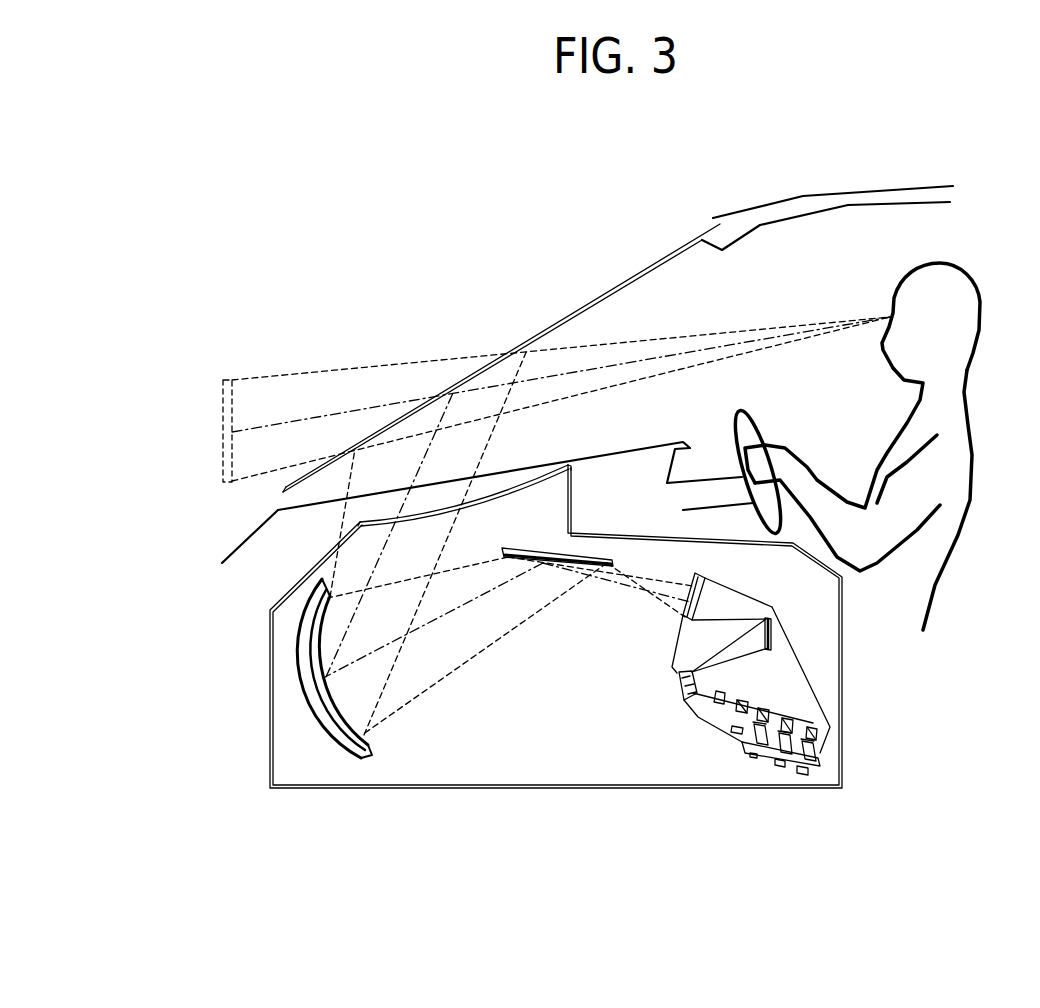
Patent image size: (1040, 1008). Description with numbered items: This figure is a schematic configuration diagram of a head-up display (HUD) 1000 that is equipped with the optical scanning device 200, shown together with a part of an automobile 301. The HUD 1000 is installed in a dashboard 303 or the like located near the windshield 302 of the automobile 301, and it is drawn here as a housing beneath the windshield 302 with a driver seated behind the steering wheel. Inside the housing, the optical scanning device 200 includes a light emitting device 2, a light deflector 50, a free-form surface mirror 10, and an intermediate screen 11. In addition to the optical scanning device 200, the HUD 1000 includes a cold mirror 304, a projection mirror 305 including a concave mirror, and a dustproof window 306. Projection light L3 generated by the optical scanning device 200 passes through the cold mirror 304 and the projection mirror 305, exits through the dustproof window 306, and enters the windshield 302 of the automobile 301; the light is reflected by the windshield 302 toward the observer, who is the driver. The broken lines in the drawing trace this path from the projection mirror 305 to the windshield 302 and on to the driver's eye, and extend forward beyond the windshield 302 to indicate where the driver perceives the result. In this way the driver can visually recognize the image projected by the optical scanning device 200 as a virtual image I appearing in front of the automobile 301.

The light emitting device 2 is at (787, 697).
The free-form surface mirror 10 is at (773, 620).
The intermediate screen 11 is at (713, 575).
The light deflector 50 is at (672, 691).
The optical scanning device 200 is at (713, 752).
The head-up display (HUD) 1000 is at (513, 798).
The automobile 301 is at (904, 182).
The windshield 302 is at (682, 247).
The dashboard 303 is at (647, 442).
The cold mirror 304 is at (606, 553).
The projection mirror 305 is at (338, 752).
The dustproof window 306 is at (530, 482).
The virtual image I is at (223, 378).
The projection light L3 is at (795, 322).